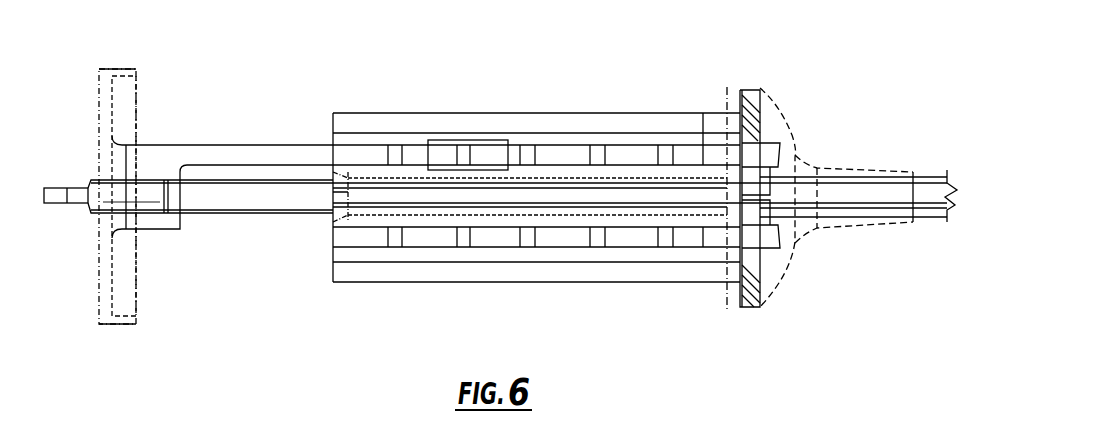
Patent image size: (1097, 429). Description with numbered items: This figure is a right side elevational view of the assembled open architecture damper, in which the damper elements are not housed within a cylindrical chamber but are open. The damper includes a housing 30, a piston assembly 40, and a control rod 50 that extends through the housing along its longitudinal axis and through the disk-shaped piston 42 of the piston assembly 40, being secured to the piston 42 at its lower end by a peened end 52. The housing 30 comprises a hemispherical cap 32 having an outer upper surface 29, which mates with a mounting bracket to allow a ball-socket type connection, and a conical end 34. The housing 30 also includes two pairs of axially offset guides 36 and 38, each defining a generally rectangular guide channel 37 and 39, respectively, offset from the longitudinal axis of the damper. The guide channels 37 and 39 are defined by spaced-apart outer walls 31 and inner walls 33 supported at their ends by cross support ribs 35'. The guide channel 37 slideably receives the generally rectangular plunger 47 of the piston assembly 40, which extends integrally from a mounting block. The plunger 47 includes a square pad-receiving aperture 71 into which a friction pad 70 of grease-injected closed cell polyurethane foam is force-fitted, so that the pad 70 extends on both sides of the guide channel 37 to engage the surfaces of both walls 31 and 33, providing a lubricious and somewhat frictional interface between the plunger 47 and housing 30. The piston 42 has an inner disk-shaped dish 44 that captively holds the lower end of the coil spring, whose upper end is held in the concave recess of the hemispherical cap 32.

The outer upper surface 29 is at (788, 130).
The housing 30 is at (805, 238).
The outer walls 31 is at (652, 150).
The hemispherical cap 32 is at (760, 90).
The inner walls 33 is at (703, 150).
The conical end 34 is at (880, 225).
The cross support ribs 35' is at (509, 200).
The guides 36 is at (675, 148).
The guide channel 37 is at (560, 146).
The guides 38 is at (575, 230).
The guide channel 39 is at (470, 236).
The piston assembly 40 is at (139, 63).
The piston 42 is at (116, 68).
The dish 44 is at (125, 296).
The plunger 47 is at (245, 145).
The control rod 50 is at (262, 213).
The peened end 52 is at (60, 188).
The friction pad 70 is at (485, 150).
The aperture 71 is at (402, 150).